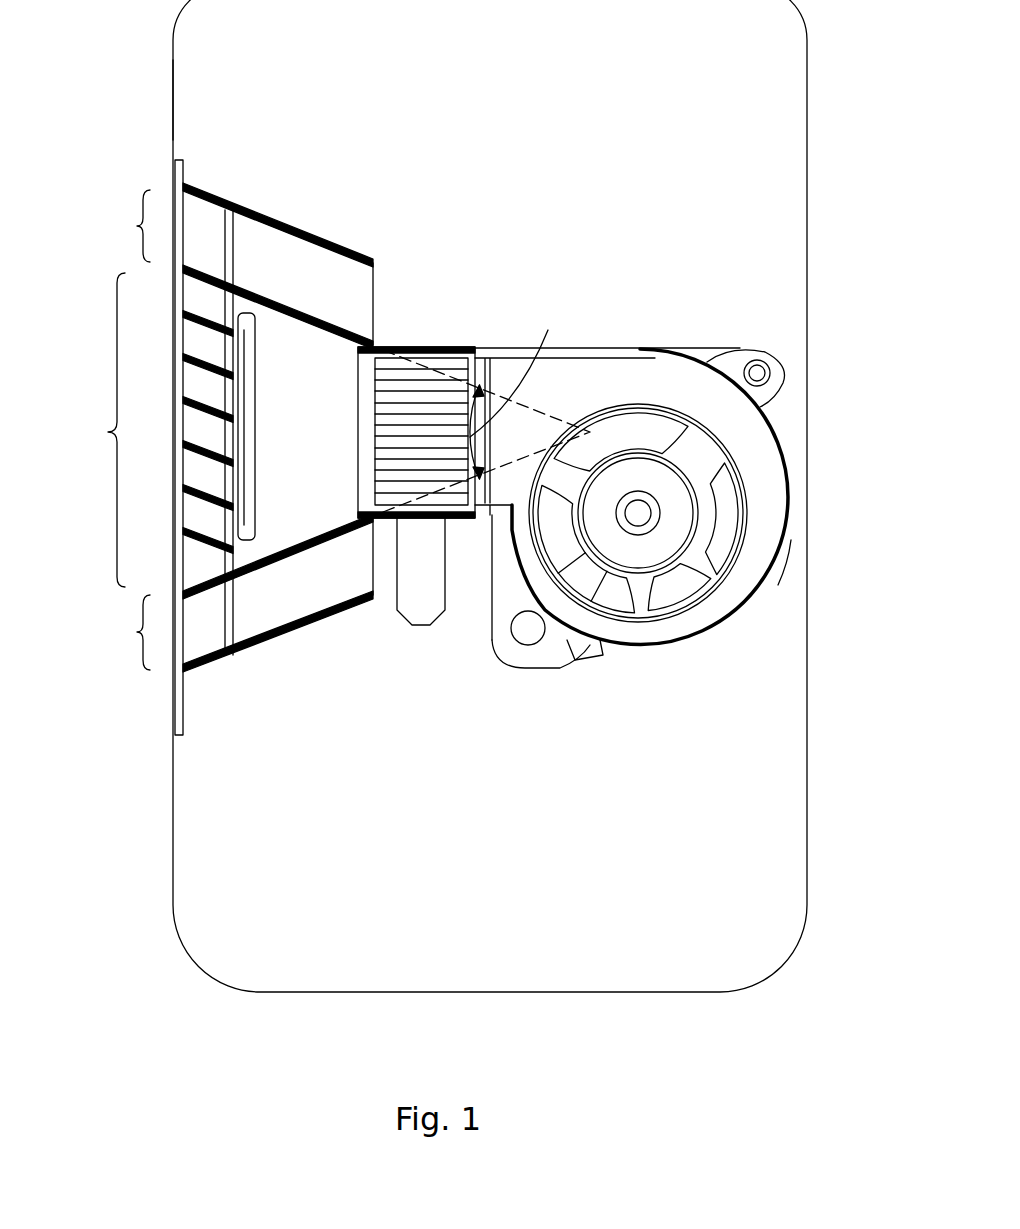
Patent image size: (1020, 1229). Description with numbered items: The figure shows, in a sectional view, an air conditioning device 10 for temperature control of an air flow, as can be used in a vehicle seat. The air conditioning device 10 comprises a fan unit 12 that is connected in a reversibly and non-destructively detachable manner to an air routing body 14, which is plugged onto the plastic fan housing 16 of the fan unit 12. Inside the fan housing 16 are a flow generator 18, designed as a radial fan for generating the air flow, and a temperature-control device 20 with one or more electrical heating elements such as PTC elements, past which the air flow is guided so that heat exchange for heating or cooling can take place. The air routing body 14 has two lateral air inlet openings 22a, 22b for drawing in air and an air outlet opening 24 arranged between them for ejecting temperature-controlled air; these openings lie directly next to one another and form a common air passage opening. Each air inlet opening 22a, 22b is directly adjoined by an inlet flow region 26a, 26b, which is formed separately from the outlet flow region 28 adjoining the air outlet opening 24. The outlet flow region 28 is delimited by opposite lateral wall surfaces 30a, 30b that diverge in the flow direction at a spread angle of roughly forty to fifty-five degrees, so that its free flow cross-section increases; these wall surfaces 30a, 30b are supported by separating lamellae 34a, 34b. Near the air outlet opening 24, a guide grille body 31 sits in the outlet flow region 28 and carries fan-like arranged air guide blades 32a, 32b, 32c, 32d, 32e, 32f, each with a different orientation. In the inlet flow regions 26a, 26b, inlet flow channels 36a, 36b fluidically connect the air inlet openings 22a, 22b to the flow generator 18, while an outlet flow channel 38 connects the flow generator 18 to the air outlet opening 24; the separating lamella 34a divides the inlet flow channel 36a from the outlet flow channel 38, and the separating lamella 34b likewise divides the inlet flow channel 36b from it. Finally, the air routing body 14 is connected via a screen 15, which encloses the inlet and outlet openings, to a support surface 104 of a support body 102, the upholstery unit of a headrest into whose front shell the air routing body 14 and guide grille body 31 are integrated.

The air conditioning device 10 is at (461, 556).
The fan unit 12 is at (708, 358).
The air routing body 14 is at (370, 264).
The screen 15 is at (180, 715).
The fan housing 16 is at (768, 482).
The flow generator 18 is at (655, 548).
The temperature-control device 20 is at (420, 388).
The air inlet opening 22a is at (135, 228).
The air inlet opening 22b is at (135, 632).
The air outlet opening 24 is at (108, 432).
The inlet flow region 26a is at (287, 232).
The inlet flow region 26b is at (283, 618).
The outlet flow region 28 is at (322, 397).
The lateral wall surface 30a is at (305, 335).
The lateral wall surface 30b is at (308, 525).
The guide grille body 31 is at (262, 445).
The air guide blade 32a is at (214, 550).
The air guide blade 32b is at (214, 498).
The air guide blade 32c is at (214, 455).
The air guide blade 32d is at (214, 411).
The air guide blade 32e is at (214, 368).
The air guide blade 32f is at (214, 325).
The separating lamella 34a is at (200, 273).
The separating lamella 34b is at (207, 590).
The inlet flow channel 36a is at (318, 262).
The inlet flow channel 36b is at (293, 608).
The outlet flow channel 38 is at (340, 452).
The support body 102 is at (680, 990).
The support surface 104 is at (173, 97).